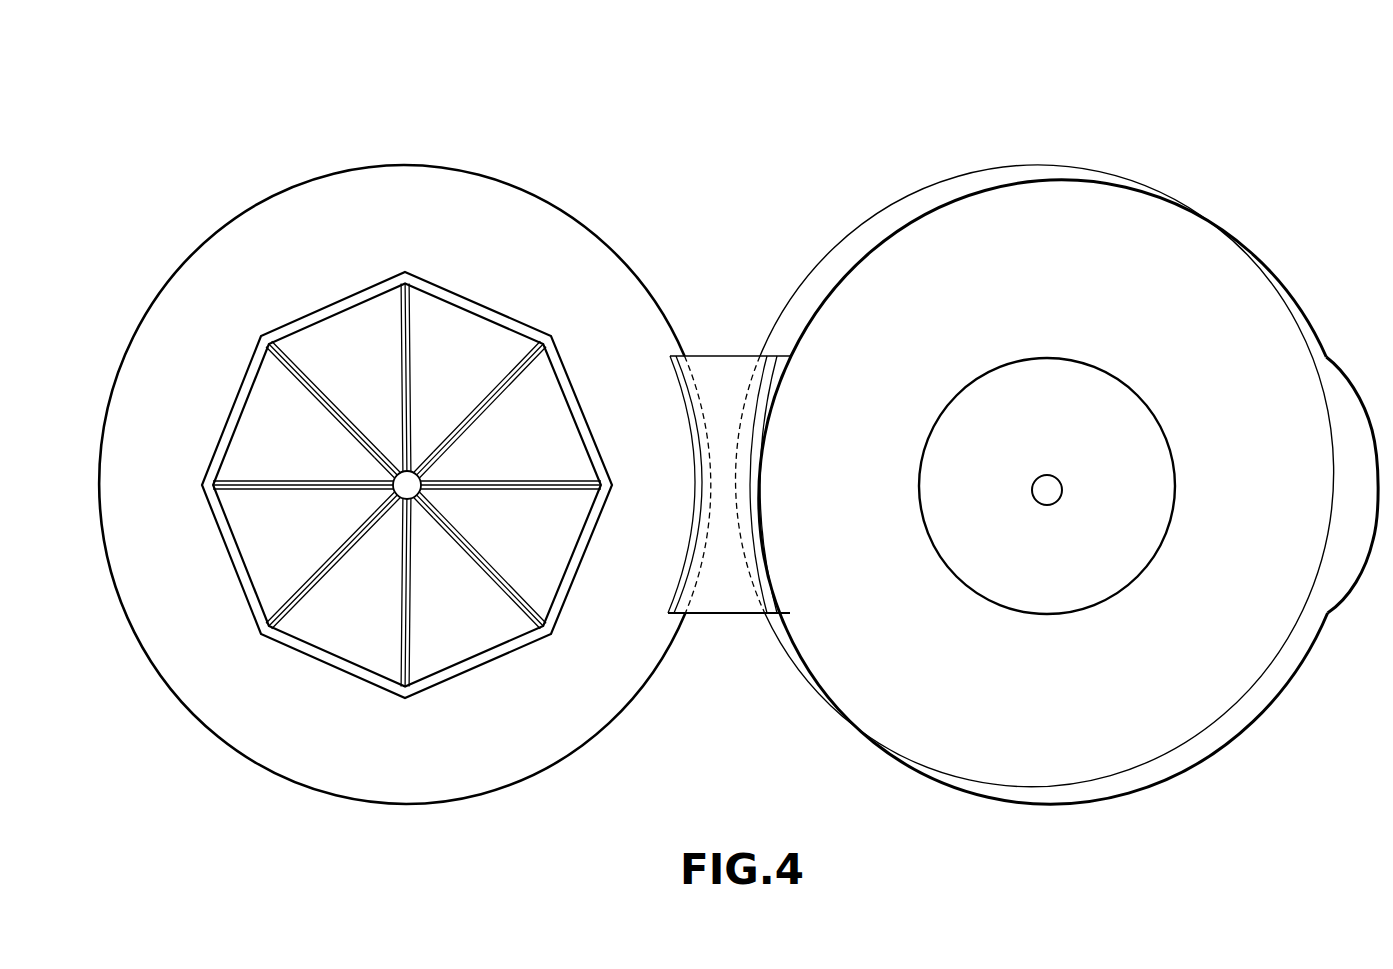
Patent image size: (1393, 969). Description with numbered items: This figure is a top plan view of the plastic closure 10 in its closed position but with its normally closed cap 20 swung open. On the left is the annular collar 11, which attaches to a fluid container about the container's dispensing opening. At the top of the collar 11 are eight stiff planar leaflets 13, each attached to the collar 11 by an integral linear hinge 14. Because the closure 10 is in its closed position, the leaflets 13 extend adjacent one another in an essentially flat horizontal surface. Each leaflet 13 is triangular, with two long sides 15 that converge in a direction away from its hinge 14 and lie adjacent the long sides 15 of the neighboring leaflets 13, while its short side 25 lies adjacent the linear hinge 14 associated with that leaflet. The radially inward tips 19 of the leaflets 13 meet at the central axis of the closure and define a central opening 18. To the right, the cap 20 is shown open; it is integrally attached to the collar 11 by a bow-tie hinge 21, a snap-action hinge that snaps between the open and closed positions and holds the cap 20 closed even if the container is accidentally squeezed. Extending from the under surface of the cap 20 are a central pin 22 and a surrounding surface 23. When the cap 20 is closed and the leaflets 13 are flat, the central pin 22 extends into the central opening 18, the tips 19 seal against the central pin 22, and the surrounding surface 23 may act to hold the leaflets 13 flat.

The plastic closure 10 is at (186, 80).
The annular collar 11 is at (150, 350).
The leaflet 13 is at (539, 416).
The linear hinge 14 is at (576, 571).
The long side 15 is at (327, 405).
The central opening 18 is at (403, 472).
The tip 19 is at (418, 468).
The cap 20 is at (1291, 691).
The bow-tie hinge 21 is at (737, 372).
The central pin 22 is at (1048, 474).
The surrounding surface 23 is at (1145, 468).
The short side 25 is at (335, 320).